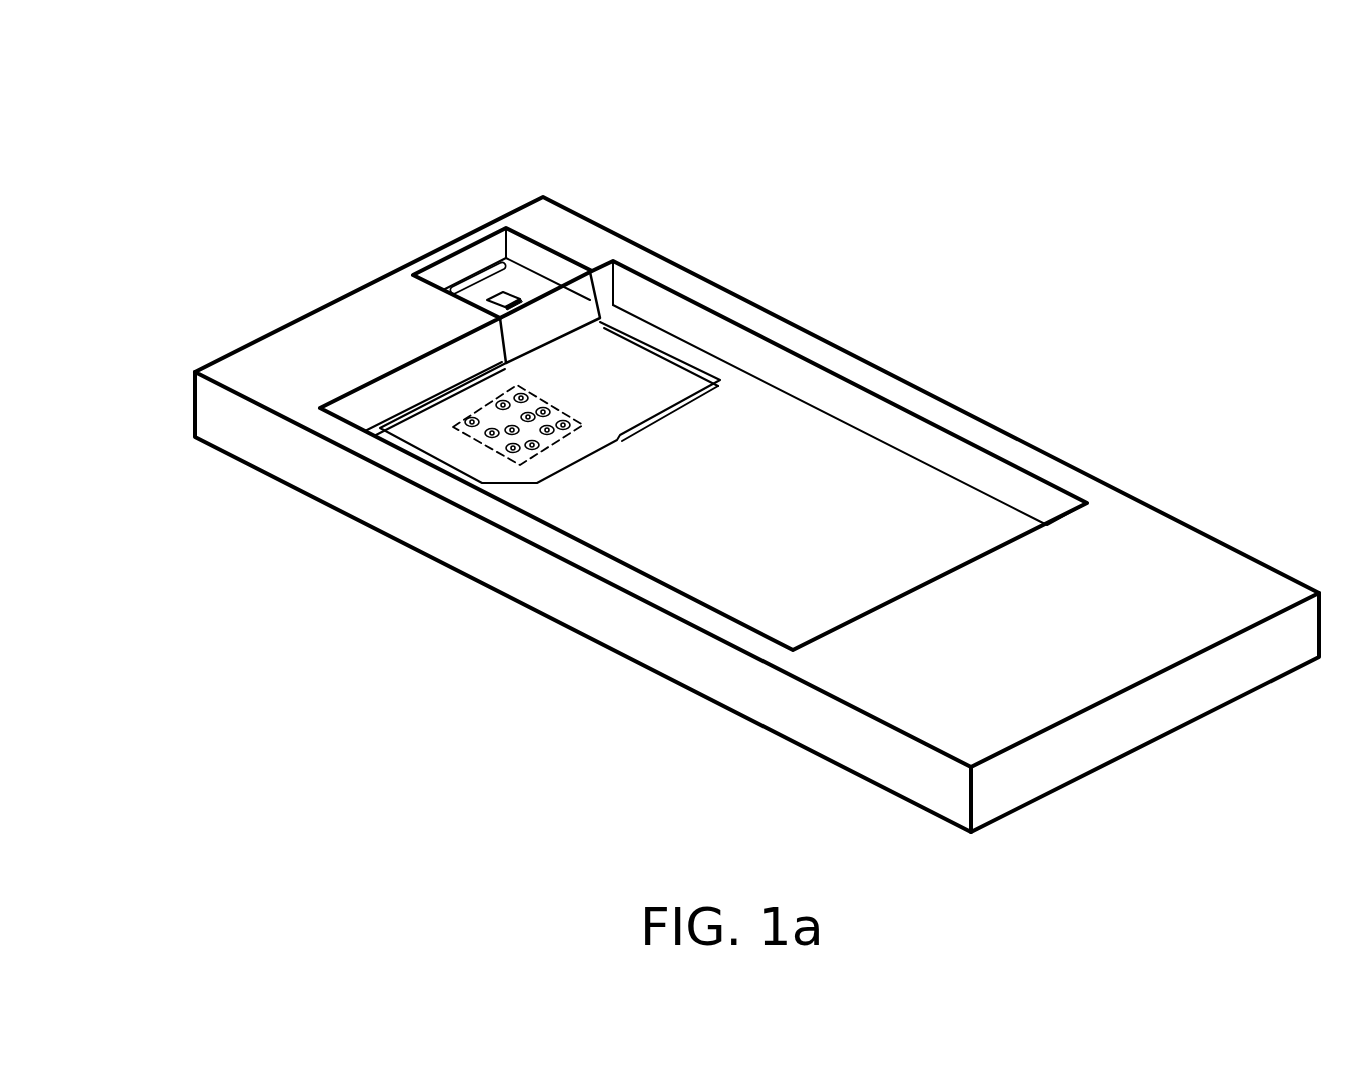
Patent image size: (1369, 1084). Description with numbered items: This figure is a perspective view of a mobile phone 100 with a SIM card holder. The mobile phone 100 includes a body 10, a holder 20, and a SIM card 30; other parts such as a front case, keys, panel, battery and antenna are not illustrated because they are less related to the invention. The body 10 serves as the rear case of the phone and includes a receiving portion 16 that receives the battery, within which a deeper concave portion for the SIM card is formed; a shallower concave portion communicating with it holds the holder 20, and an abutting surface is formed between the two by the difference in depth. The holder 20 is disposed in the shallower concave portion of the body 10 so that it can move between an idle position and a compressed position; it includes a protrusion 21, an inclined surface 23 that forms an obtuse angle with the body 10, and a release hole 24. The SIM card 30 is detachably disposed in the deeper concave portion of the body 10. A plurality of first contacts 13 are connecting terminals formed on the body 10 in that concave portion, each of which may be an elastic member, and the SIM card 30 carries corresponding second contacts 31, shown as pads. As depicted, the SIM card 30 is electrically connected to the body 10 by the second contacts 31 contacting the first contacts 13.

The mobile phone 100 is at (148, 140).
The body 10 is at (310, 355).
The receiving portion 16 is at (902, 477).
The holder 20 is at (528, 287).
The protrusion 21 is at (500, 296).
The release hole 24 is at (468, 283).
The inclined surface 23 is at (571, 328).
The SIM card 30 is at (655, 376).
The first contacts 13 is at (492, 447).
The second contacts 31 is at (480, 433).